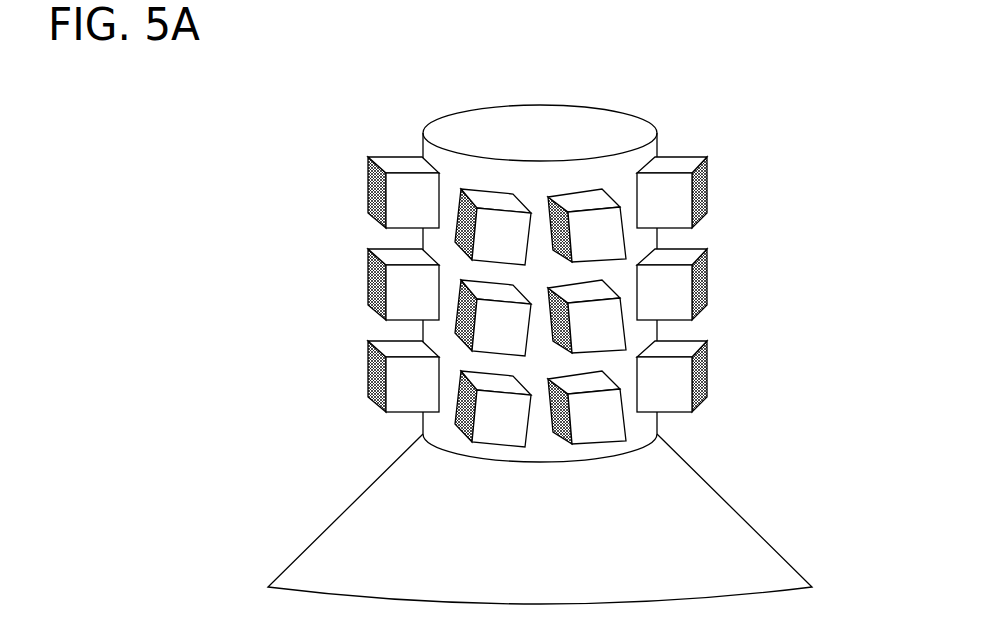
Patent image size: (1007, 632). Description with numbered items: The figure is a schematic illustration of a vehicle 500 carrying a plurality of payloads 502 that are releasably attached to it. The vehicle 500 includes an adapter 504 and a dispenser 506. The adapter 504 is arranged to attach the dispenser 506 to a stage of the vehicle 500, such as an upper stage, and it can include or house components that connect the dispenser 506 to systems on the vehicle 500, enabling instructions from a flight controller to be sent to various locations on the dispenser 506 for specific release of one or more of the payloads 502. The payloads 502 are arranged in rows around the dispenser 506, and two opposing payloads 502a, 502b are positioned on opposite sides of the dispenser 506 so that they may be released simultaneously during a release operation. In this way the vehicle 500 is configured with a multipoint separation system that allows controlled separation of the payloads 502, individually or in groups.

The vehicle 500 is at (534, 331).
The payloads 502 is at (700, 285).
The payload 502a is at (697, 185).
The payload 502b is at (380, 190).
The adapter 504 is at (357, 552).
The dispenser 506 is at (582, 138).